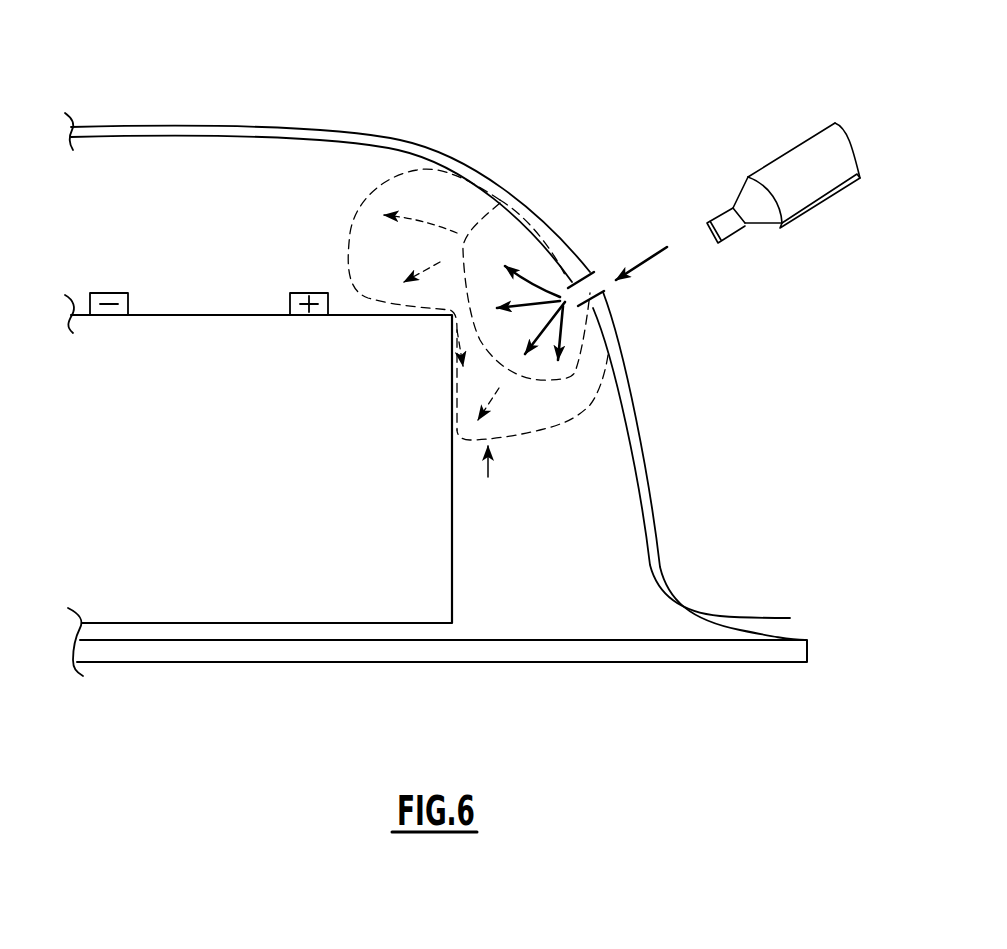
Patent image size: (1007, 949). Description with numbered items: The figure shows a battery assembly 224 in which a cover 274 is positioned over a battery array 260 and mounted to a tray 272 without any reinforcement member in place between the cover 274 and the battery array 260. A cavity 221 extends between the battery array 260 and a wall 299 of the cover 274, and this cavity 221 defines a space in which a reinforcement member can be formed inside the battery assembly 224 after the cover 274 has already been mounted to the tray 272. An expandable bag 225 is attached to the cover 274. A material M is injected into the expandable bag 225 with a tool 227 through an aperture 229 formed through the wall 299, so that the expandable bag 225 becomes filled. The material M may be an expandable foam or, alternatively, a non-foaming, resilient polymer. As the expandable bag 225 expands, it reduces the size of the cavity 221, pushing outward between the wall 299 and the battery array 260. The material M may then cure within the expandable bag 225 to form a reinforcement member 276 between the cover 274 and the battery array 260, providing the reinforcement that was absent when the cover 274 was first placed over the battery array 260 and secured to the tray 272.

The battery assembly 224 is at (468, 85).
The cover 274 is at (225, 133).
The wall 299 is at (628, 440).
The tray 272 is at (536, 648).
The battery array 260 is at (246, 482).
The cavity 221 is at (328, 216).
The expandable bag 225 is at (548, 385).
The aperture 229 is at (588, 277).
The tool 227 is at (783, 152).
The reinforcement member 276 is at (488, 477).
The material M is at (667, 247).